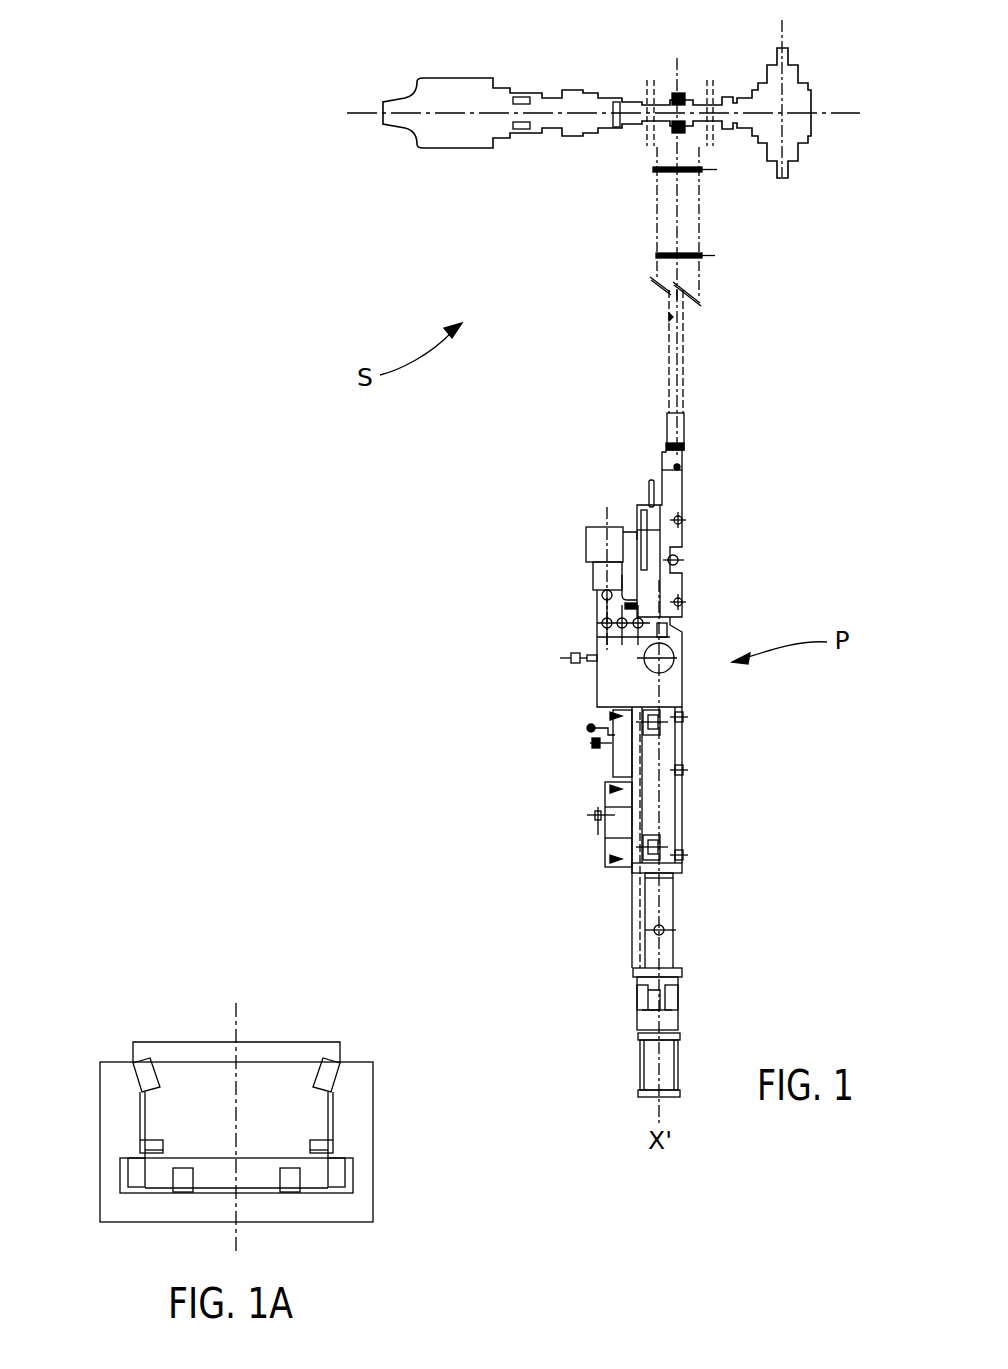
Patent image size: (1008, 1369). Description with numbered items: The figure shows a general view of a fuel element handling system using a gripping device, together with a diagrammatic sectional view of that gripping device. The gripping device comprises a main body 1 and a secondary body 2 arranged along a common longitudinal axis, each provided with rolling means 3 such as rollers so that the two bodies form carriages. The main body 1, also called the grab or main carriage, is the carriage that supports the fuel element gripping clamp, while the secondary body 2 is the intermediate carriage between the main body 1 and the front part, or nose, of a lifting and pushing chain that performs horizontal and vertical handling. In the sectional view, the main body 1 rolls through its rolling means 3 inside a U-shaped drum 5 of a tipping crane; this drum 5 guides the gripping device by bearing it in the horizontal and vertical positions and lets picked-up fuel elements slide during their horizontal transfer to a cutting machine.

In FIG. 1, the main body 1 is at (660, 902).
In FIG. 1A, the main body 1 is at (282, 1062).
In FIG. 1, the secondary body 2 is at (675, 540).
In FIG. 1, the rolling means 3 is at (680, 467).
In FIG. 1A, the rolling means 3 is at (153, 1073).
In FIG. 1A, the U-shaped drum 5 is at (358, 1123).